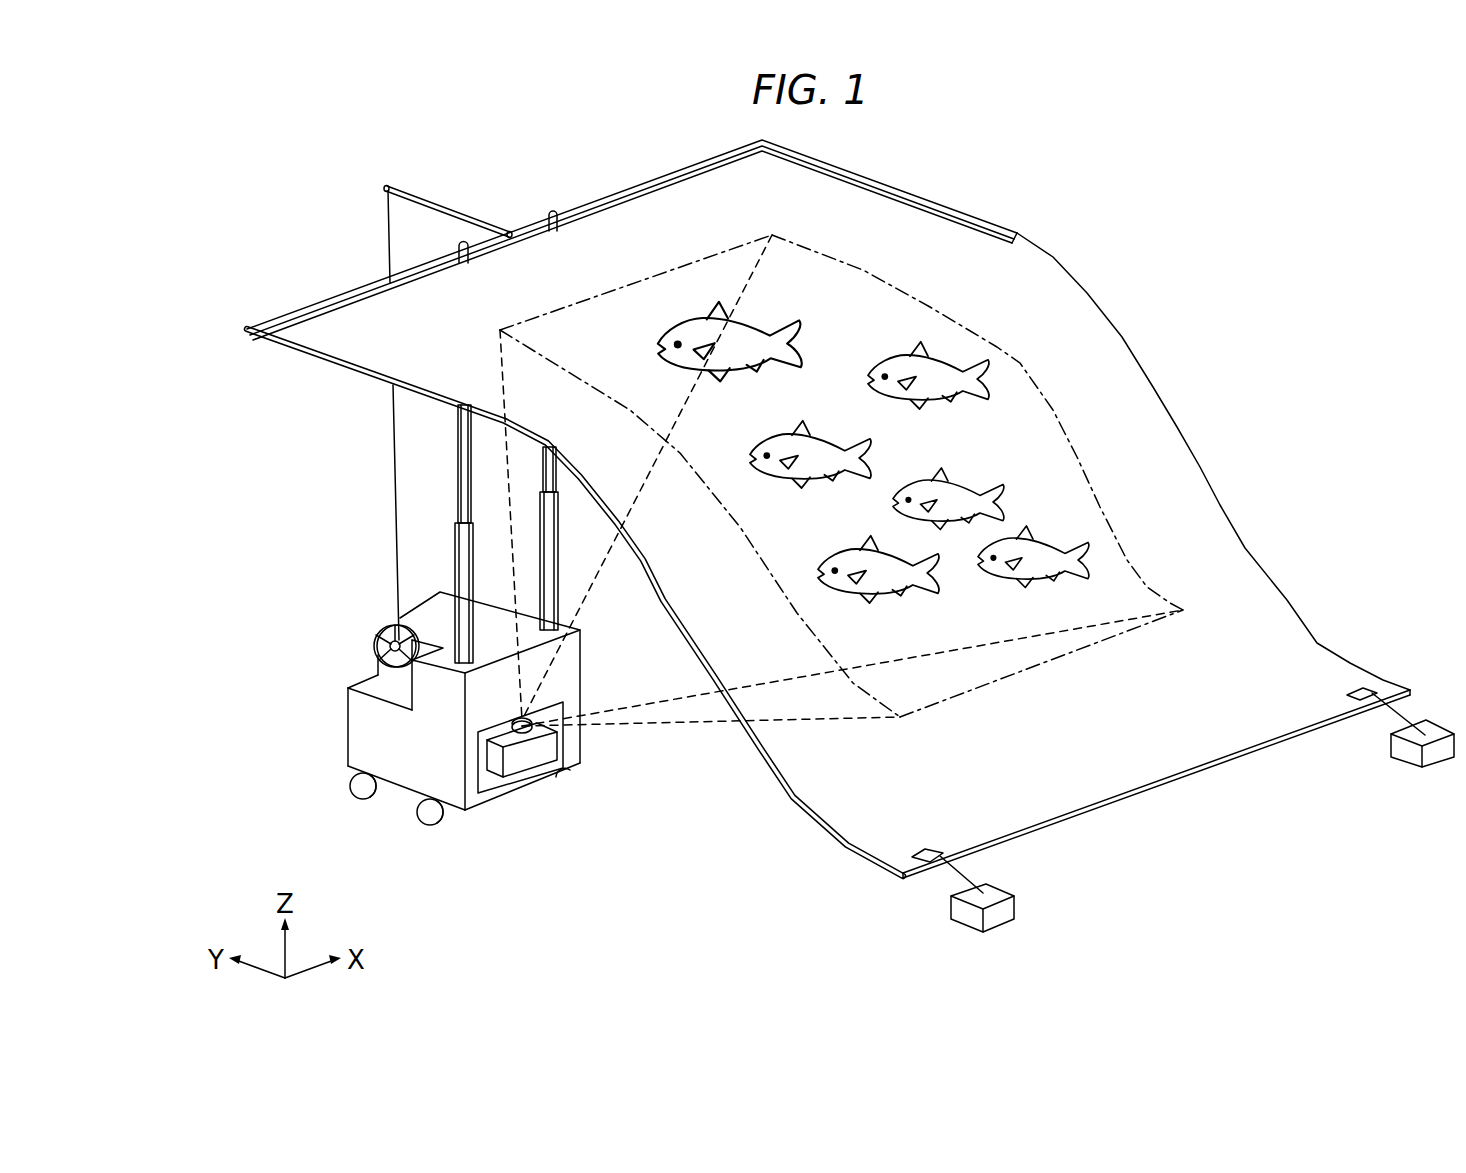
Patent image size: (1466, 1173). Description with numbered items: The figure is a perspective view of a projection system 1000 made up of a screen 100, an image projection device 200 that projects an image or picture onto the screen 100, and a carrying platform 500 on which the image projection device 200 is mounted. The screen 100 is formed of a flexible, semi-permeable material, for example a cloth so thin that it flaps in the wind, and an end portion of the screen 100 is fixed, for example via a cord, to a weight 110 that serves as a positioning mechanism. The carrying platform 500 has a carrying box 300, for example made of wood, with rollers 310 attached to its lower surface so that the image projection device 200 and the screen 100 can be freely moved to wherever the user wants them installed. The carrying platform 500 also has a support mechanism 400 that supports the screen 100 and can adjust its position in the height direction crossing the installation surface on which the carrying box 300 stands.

The projection system 1000 is at (1250, 194).
The screen 100 is at (1125, 341).
The weight 110 is at (1002, 919).
The image projection device 200 is at (536, 760).
The carrying box 300 is at (347, 719).
The rollers 310 is at (430, 822).
The support mechanism 400 is at (240, 185).
The carrying platform 500 is at (174, 393).